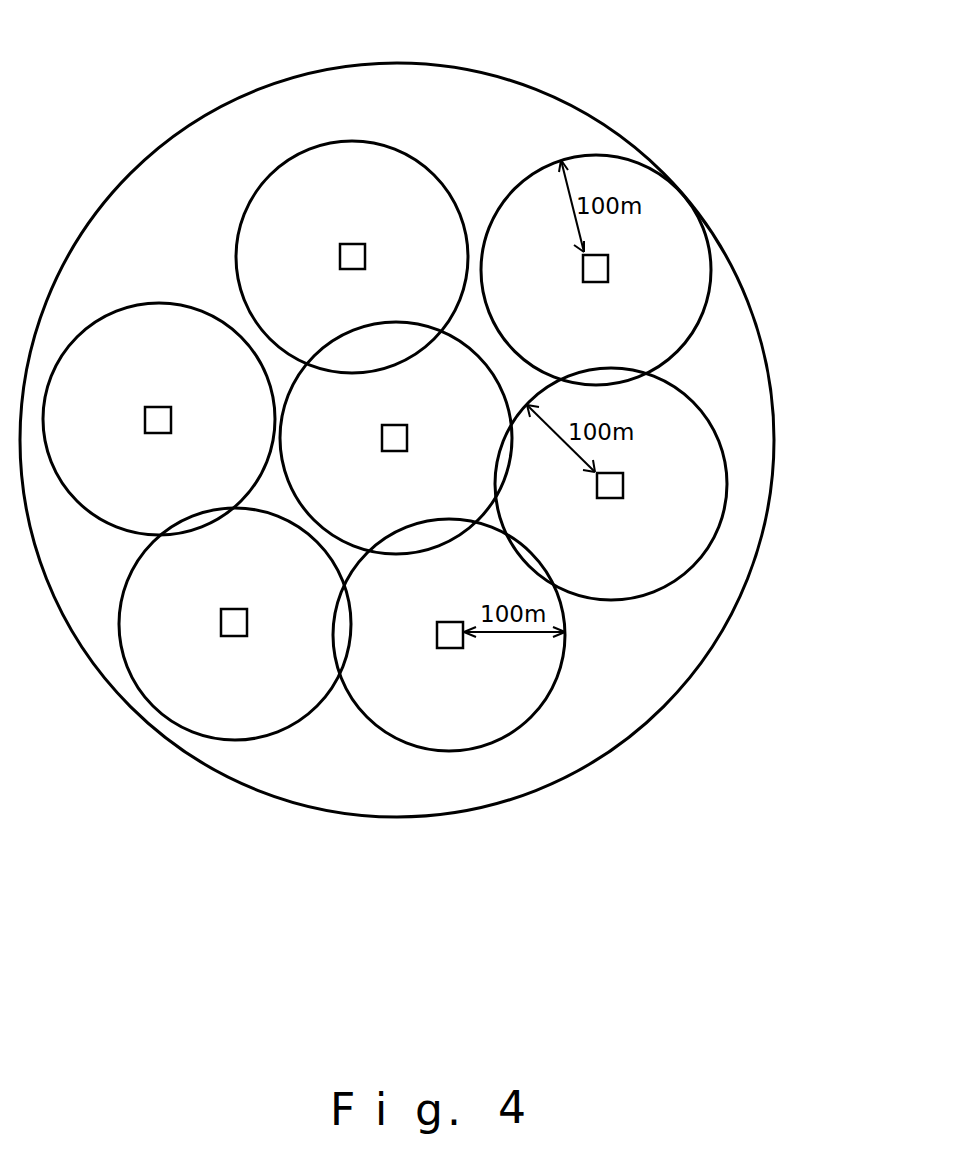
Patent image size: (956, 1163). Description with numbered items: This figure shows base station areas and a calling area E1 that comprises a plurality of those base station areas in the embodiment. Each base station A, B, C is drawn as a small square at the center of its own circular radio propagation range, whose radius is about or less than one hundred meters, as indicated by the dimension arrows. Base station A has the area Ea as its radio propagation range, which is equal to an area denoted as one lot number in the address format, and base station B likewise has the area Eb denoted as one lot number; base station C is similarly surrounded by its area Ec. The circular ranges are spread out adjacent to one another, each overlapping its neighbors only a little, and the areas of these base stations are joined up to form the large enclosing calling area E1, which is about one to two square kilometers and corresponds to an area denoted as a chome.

The calling area E1 is at (520, 84).
The area Ea is at (710, 306).
The area Eb is at (723, 453).
The area Ec is at (565, 662).
The base station A is at (635, 274).
The base station B is at (638, 492).
The base station C is at (480, 667).